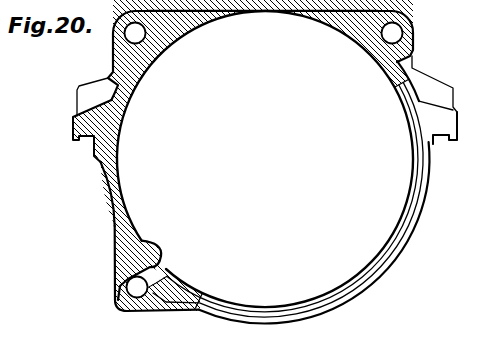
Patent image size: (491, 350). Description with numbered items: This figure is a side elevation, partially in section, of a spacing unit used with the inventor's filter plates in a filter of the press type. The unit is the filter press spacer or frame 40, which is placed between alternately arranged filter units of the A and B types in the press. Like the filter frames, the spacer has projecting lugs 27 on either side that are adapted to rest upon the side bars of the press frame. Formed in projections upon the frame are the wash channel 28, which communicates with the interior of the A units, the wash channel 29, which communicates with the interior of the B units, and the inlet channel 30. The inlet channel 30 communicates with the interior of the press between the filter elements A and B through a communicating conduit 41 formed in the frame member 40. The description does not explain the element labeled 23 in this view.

The cover plate 23 is at (292, 5).
The projecting lugs 27 is at (78, 143).
The wash channel 28 is at (113, 37).
The wash channel 29 is at (400, 33).
The inlet channel 30 is at (127, 284).
The filter press spacer 40 is at (109, 210).
The communicating conduit 41 is at (141, 240).